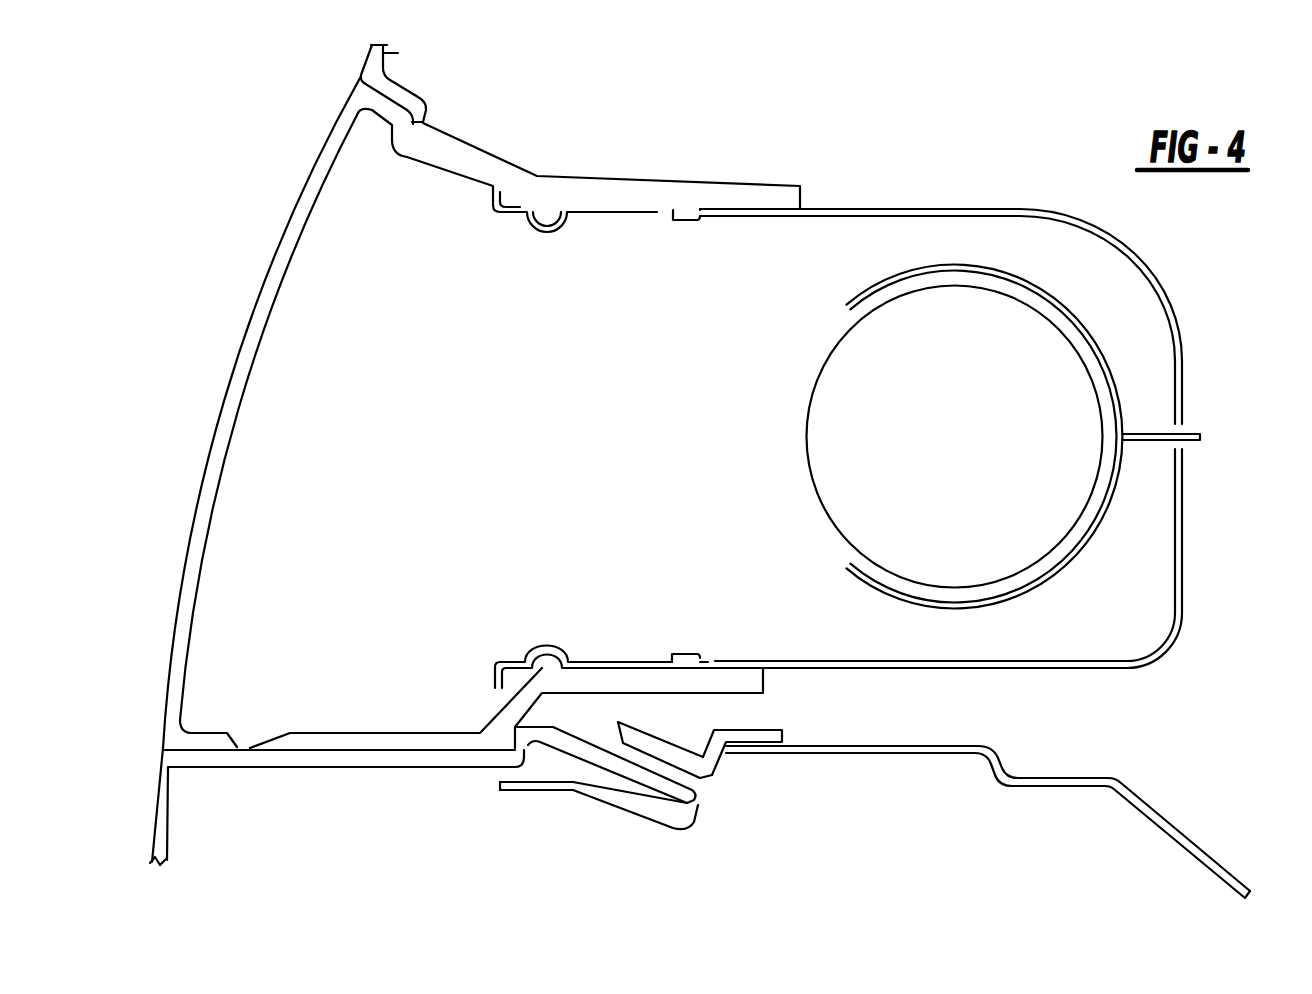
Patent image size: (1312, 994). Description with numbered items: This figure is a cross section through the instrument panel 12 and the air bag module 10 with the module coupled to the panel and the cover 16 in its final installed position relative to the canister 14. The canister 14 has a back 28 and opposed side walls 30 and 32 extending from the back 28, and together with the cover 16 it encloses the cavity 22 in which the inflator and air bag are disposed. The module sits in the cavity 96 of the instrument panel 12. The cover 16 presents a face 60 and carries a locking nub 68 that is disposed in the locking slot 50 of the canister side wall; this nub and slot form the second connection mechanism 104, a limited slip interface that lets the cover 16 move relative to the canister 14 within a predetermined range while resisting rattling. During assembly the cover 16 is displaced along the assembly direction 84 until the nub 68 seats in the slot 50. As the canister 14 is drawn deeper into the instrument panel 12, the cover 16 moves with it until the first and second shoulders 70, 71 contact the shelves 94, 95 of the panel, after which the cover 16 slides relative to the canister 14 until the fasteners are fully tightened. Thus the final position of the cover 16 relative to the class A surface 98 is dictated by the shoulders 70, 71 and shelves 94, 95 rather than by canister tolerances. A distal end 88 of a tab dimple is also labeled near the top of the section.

The air bag module 10 is at (207, 459).
The instrument panel 12 is at (298, 766).
The canister 14 is at (1150, 277).
The cover 16 is at (247, 334).
The cavity 22 is at (615, 392).
The back 28 is at (1185, 513).
The side wall 30 is at (855, 208).
The side wall 32 is at (1133, 670).
The locking slot 50 is at (662, 216).
The face 60 is at (303, 191).
The locking nub 68 is at (695, 218).
The first shoulder 70 is at (397, 123).
The second shoulder 71 is at (510, 737).
The assembly direction 84 is at (358, 416).
The distal end 88 is at (362, 58).
The shelf 94 is at (424, 122).
The shelf 95 is at (533, 743).
The cavity 96 is at (826, 695).
The class A surface 98 is at (157, 784).
The second connection mechanism 104 is at (654, 648).